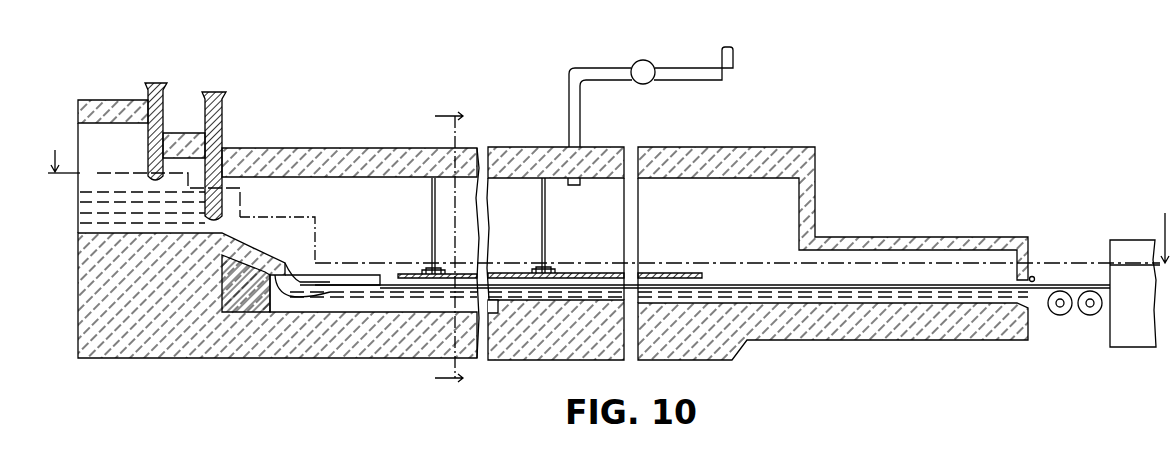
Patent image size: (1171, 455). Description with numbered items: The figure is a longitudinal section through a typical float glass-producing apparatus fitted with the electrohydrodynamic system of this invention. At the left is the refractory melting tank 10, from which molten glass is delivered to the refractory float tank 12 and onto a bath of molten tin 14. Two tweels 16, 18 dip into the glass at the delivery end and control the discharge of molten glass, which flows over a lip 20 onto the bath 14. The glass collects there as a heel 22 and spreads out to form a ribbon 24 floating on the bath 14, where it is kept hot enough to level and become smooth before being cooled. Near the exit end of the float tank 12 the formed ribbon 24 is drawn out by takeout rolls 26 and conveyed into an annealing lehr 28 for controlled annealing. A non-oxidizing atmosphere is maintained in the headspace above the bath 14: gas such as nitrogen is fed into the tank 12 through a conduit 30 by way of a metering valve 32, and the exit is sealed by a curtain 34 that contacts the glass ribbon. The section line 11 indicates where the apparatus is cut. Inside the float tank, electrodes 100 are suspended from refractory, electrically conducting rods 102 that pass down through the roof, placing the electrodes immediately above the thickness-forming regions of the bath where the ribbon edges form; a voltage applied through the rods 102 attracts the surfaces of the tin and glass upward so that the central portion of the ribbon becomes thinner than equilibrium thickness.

The refractory melting tank 10 is at (140, 358).
The section line 11 is at (608, 195).
The refractory float tank 12 is at (542, 375).
The bath of molten tin 14 is at (714, 298).
The tweel 16 is at (160, 108).
The tweel 18 is at (222, 118).
The lip 20 is at (245, 253).
The heel 22 is at (298, 282).
The ribbon 24 is at (744, 291).
The takeout rolls 26 is at (1084, 312).
The annealing lehr 28 is at (1118, 250).
The conduit 30 is at (577, 108).
The metering valve 32 is at (650, 82).
The curtain 34 is at (1035, 287).
The electrodes 100 is at (415, 268).
The refractory, electrically conducting rods 102 is at (432, 208).